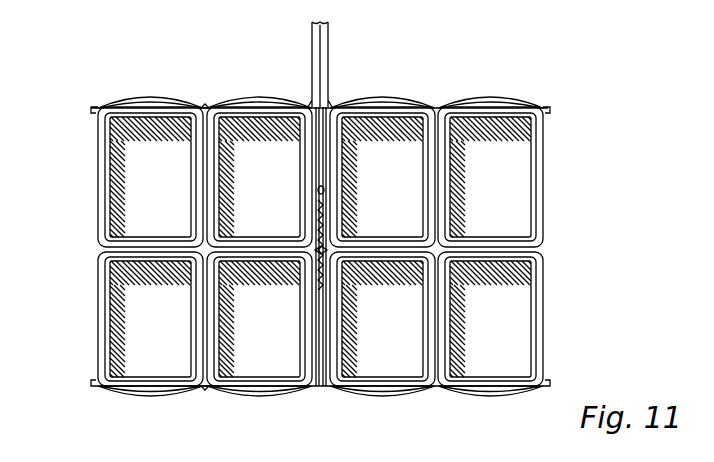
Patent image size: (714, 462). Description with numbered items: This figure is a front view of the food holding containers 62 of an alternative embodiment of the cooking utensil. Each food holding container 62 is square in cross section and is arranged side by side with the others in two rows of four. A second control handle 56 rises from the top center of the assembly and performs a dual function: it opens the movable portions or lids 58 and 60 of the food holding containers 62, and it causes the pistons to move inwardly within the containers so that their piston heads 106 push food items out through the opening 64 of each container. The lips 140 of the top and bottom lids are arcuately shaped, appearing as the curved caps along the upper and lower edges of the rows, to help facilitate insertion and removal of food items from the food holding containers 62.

The second control handle 56 is at (330, 50).
The lid 58 is at (207, 107).
The lid 60 is at (204, 388).
The food holding container 62 is at (98, 193).
The opening 64 is at (527, 198).
The piston head 106 is at (512, 177).
The lip 140 is at (466, 103).